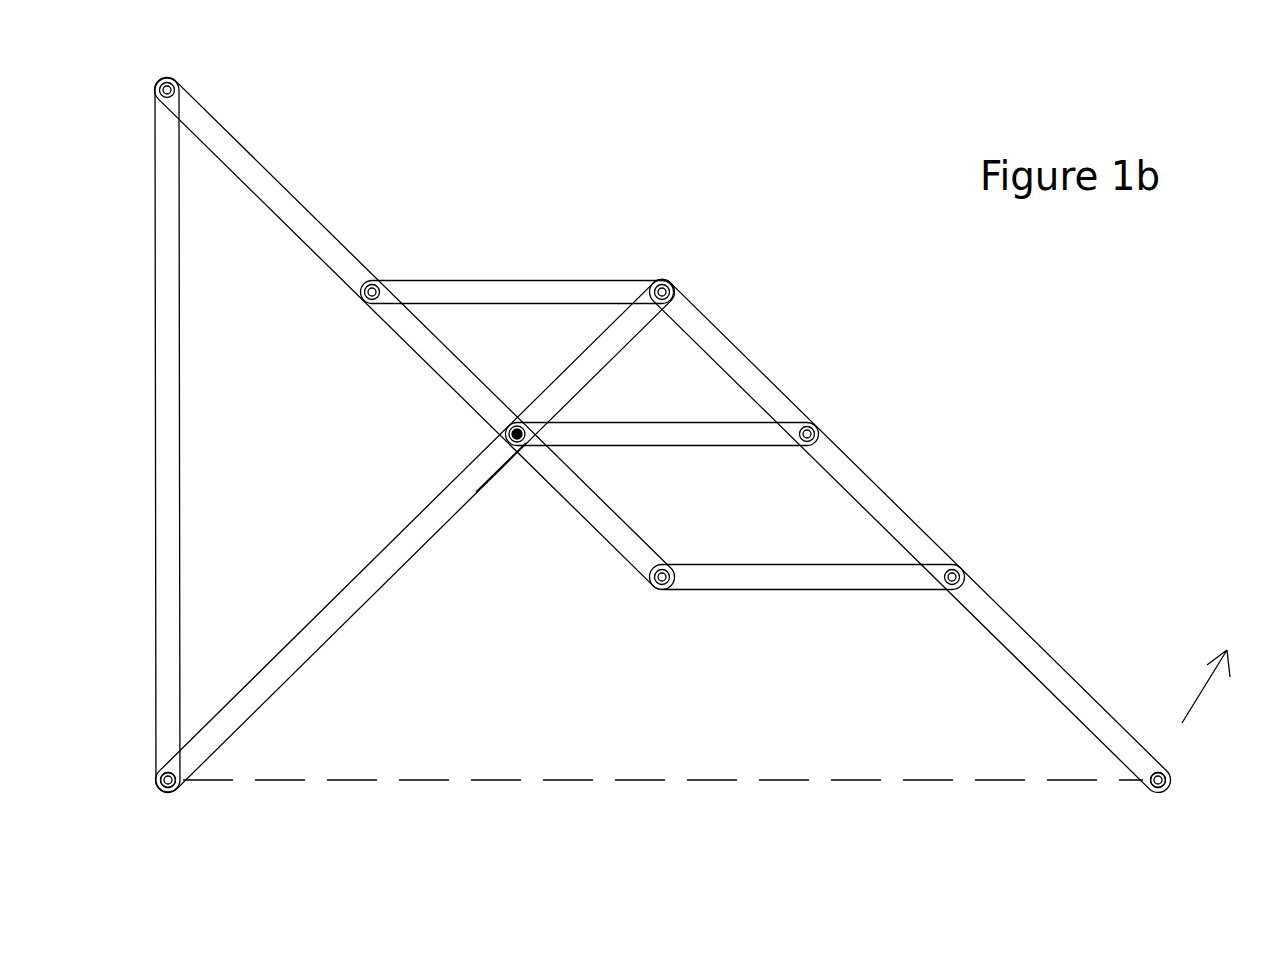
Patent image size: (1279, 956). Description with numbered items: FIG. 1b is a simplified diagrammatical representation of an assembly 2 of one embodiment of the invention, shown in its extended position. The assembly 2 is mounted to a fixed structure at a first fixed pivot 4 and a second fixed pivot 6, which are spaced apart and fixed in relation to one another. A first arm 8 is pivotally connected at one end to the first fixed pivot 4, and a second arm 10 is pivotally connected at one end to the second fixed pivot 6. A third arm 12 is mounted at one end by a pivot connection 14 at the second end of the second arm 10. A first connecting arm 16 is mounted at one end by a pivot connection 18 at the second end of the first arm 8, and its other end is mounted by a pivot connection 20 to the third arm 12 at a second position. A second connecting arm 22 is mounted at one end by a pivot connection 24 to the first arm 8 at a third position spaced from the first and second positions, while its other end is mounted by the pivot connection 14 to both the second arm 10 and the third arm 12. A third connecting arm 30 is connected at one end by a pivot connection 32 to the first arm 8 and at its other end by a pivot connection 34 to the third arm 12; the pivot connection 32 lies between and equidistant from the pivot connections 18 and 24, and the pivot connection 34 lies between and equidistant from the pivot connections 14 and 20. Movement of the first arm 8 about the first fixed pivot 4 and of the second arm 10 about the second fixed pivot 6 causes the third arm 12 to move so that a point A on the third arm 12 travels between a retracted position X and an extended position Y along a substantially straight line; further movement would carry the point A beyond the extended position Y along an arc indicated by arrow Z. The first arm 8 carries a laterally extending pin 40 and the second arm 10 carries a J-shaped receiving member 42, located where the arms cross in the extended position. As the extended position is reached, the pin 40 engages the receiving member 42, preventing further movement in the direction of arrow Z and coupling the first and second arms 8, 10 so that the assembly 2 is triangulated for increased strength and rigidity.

The assembly 2 is at (795, 120).
The first fixed pivot 4 is at (178, 85).
The second fixed pivot 6 is at (160, 780).
The first arm 8 is at (278, 192).
The second arm 10 is at (390, 560).
The third arm 12 is at (766, 380).
The pivot connection 14 is at (668, 287).
The first connecting arm 16 is at (805, 580).
The pivot connection 18 is at (655, 586).
The pivot connection 20 is at (960, 572).
The second connecting arm 22 is at (517, 290).
The pivot connection 24 is at (366, 288).
The third connecting arm 30 is at (683, 438).
The pivot connection 32 is at (503, 449).
The pivot connection 34 is at (820, 440).
The pin 40 is at (518, 465).
The J-shaped receiving member 42 is at (503, 421).
The point A is at (1167, 772).
The retracted position X is at (168, 806).
The extended position Y is at (1163, 790).
The arrow Z is at (1220, 655).